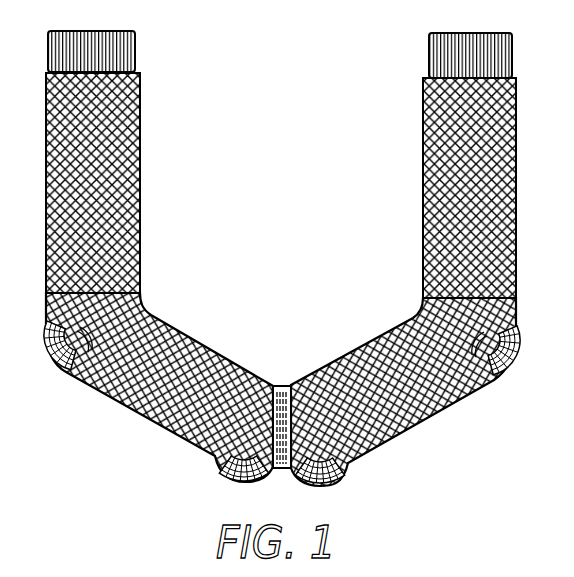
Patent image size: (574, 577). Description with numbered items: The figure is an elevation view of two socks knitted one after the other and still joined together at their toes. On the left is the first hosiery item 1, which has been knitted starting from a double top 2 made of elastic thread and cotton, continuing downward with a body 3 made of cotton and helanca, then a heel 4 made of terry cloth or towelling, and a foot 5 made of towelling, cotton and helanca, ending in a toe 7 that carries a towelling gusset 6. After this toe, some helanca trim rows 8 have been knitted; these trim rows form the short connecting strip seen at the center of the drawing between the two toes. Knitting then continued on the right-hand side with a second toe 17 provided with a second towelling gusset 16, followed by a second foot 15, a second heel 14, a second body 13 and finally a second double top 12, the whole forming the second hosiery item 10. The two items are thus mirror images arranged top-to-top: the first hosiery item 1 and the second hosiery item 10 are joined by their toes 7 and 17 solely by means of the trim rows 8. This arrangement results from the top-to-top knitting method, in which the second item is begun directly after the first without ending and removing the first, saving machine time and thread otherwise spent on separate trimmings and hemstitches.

The first hosiery item 1 is at (158, 272).
The double top 2 is at (122, 44).
The body 3 is at (115, 218).
The heel 4 is at (63, 370).
The foot 5 is at (150, 322).
The towelling gusset 6 is at (220, 463).
The toe 7 is at (251, 375).
The trim rows 8 is at (276, 383).
The second hosiery item 10 is at (414, 267).
The second double top 12 is at (440, 47).
The second body 13 is at (430, 220).
The second heel 14 is at (493, 367).
The second foot 15 is at (380, 350).
The second towelling gusset 16 is at (338, 465).
The second toe 17 is at (297, 392).